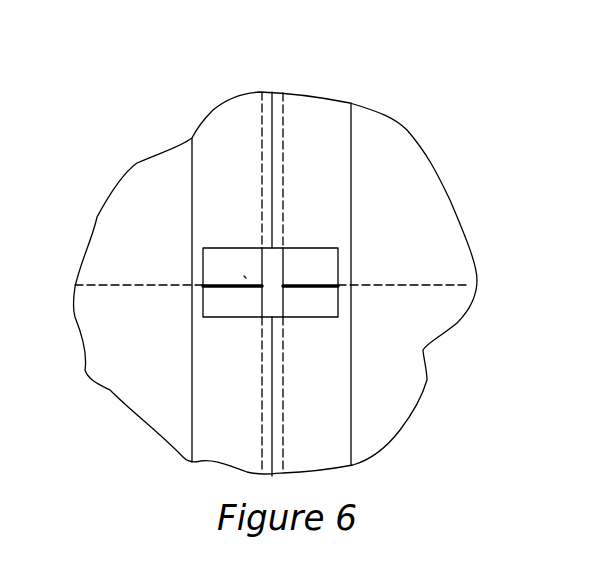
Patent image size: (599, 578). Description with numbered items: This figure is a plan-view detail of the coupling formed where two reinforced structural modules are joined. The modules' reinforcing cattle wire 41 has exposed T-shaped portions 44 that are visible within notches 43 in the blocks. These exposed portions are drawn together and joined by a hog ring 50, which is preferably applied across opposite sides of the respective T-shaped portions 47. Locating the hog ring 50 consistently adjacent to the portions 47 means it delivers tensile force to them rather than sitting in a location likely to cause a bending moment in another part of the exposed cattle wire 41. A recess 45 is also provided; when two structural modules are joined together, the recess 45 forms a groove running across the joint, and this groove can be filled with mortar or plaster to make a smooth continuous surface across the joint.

The cattle wire 41 is at (148, 282).
The notches 43 is at (223, 248).
The exposed T-shaped portions 44 is at (237, 283).
The recess 45 is at (348, 148).
The T-shaped portions 47 is at (213, 283).
The hog ring 50 is at (245, 277).